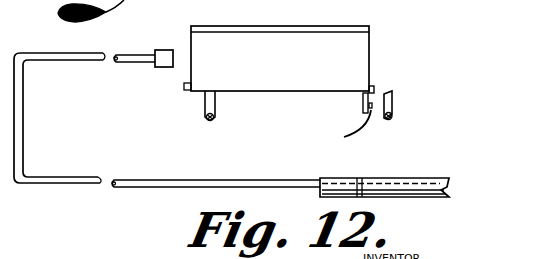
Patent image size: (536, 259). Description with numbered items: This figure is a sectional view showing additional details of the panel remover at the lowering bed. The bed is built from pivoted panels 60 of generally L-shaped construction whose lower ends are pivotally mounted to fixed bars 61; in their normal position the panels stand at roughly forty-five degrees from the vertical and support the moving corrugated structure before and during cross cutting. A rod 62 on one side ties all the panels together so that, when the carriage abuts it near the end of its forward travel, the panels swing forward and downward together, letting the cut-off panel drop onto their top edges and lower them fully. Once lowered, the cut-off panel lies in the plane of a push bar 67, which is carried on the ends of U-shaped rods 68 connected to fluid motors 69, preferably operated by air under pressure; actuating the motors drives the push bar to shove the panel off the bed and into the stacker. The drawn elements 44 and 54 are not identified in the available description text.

The frame tube 44 is at (52, 142).
The pins 54 is at (214, 119).
The pivoted panels 60 is at (352, 60).
The fixed bars 61 is at (342, 123).
The rod 62 is at (373, 86).
The push bar 67 is at (162, 57).
The U-shaped rods 68 is at (68, 183).
The fluid motors 69 is at (393, 182).